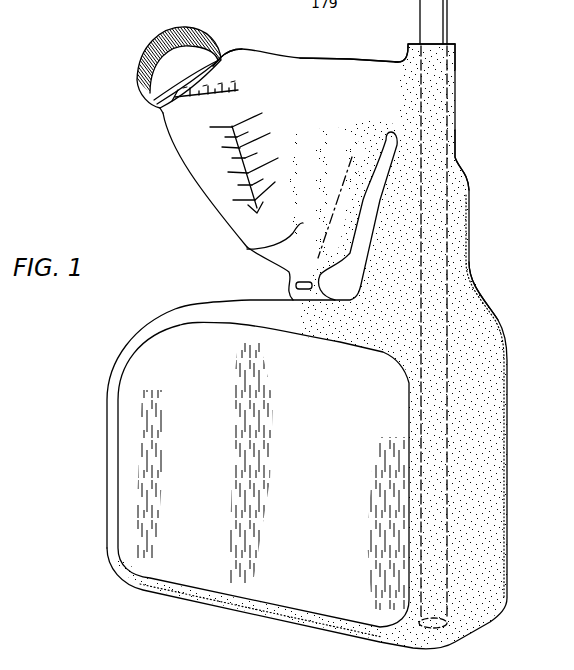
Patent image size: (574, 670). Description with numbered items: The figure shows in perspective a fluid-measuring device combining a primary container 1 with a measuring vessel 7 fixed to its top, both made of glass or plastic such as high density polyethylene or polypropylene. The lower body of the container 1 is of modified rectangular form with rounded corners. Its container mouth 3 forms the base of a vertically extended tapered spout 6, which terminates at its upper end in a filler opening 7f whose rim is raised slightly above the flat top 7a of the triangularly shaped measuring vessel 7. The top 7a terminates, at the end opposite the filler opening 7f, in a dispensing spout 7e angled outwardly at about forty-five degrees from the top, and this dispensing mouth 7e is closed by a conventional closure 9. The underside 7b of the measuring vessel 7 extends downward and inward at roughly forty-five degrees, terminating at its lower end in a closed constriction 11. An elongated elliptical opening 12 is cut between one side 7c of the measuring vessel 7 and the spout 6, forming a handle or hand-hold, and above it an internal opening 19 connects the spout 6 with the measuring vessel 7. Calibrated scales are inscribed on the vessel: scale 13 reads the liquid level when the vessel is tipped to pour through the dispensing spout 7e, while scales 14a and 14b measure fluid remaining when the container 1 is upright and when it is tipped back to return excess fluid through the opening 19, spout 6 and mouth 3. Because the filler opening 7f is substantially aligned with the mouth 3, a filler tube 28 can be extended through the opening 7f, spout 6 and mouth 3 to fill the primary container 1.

The primary container 1 is at (492, 457).
The container mouth 3 is at (458, 260).
The tapered spout 6 is at (443, 150).
The measuring vessel 7 is at (298, 77).
The flat top 7a is at (345, 83).
The underside 7b is at (163, 140).
The side of the measuring vessel 7c is at (253, 243).
The dispensing spout 7e is at (221, 58).
The filler opening 7f is at (455, 70).
The closure 9 is at (160, 47).
The closed constriction 11 is at (288, 293).
The elliptical opening 12 is at (395, 131).
The scale 13 is at (173, 108).
The scale 14a is at (248, 173).
The scale 14b is at (262, 152).
The internal opening 19 is at (406, 68).
The filler tube 28 is at (446, 12).